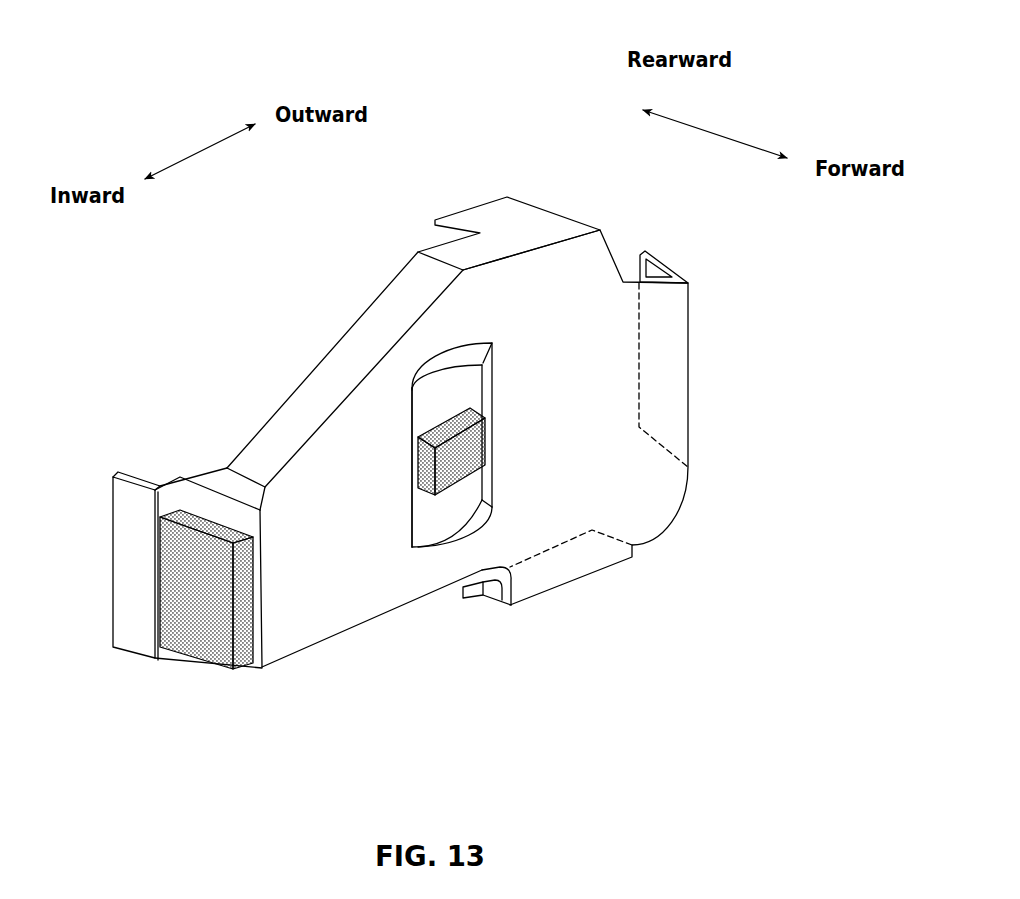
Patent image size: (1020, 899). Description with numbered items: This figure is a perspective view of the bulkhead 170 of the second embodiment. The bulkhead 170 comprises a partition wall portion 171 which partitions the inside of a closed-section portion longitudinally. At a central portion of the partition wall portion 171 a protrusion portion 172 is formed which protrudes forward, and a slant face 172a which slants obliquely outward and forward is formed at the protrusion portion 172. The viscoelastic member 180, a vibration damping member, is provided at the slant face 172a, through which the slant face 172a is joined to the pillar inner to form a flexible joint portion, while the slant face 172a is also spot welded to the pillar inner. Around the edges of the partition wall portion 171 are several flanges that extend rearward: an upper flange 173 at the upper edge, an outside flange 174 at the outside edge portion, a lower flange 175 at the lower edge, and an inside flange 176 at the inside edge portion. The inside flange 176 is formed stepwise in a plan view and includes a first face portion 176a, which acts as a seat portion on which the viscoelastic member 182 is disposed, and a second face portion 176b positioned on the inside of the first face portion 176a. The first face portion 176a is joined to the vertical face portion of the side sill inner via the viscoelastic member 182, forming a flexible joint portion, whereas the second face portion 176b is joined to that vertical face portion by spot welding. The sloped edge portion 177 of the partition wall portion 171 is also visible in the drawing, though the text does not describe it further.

The bulkhead 170 is at (545, 116).
The partition wall portion 171 is at (340, 617).
The protrusion portion 172 is at (469, 356).
The slant face 172a is at (424, 394).
The tab 173 is at (495, 216).
The outside flange 174 is at (664, 264).
The lower flange 175 is at (482, 590).
The inside flange 176 is at (140, 528).
The first face portion 176a is at (200, 499).
The second face portion 176b is at (135, 563).
The inclined portion 177 is at (368, 340).
The viscoelastic member 180 is at (470, 455).
The viscoelastic member 182 is at (205, 643).